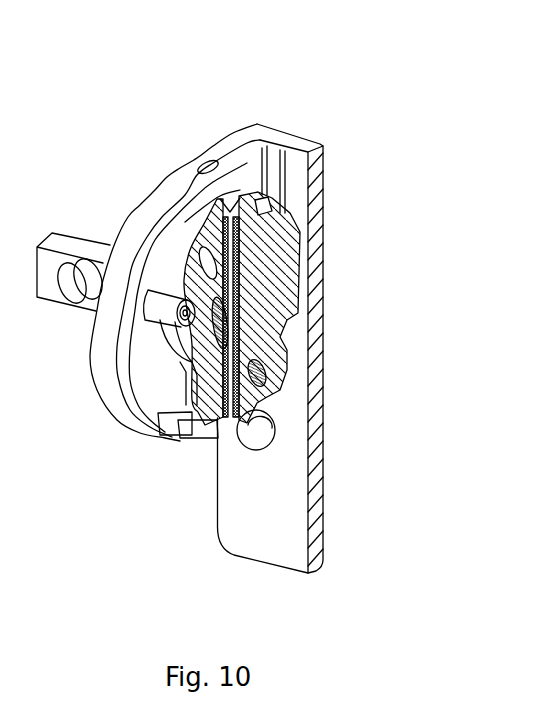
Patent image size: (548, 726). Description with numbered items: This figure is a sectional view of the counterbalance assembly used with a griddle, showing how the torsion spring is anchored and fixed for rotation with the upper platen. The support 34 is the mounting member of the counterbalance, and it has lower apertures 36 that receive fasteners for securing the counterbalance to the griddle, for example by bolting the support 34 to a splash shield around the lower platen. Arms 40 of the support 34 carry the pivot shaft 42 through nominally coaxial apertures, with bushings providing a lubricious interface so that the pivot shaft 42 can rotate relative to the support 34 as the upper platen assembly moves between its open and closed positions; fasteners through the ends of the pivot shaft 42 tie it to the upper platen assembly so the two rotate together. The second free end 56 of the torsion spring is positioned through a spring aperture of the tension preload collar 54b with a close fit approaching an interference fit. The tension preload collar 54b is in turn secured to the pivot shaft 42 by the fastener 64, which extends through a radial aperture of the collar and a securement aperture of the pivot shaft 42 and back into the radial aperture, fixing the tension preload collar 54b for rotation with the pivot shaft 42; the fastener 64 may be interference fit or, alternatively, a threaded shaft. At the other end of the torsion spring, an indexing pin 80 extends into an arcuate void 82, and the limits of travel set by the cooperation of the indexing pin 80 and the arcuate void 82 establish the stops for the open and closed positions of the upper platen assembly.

The support 34 is at (252, 517).
The lower apertures 36 is at (273, 427).
The arms 40 is at (113, 338).
The pivot shaft 42 is at (262, 310).
The tension preload collar 54b is at (282, 237).
The second free end 56 is at (270, 378).
The fastener 64 is at (228, 200).
The indexing pin 80 is at (153, 310).
The arcuate void 82 is at (157, 385).